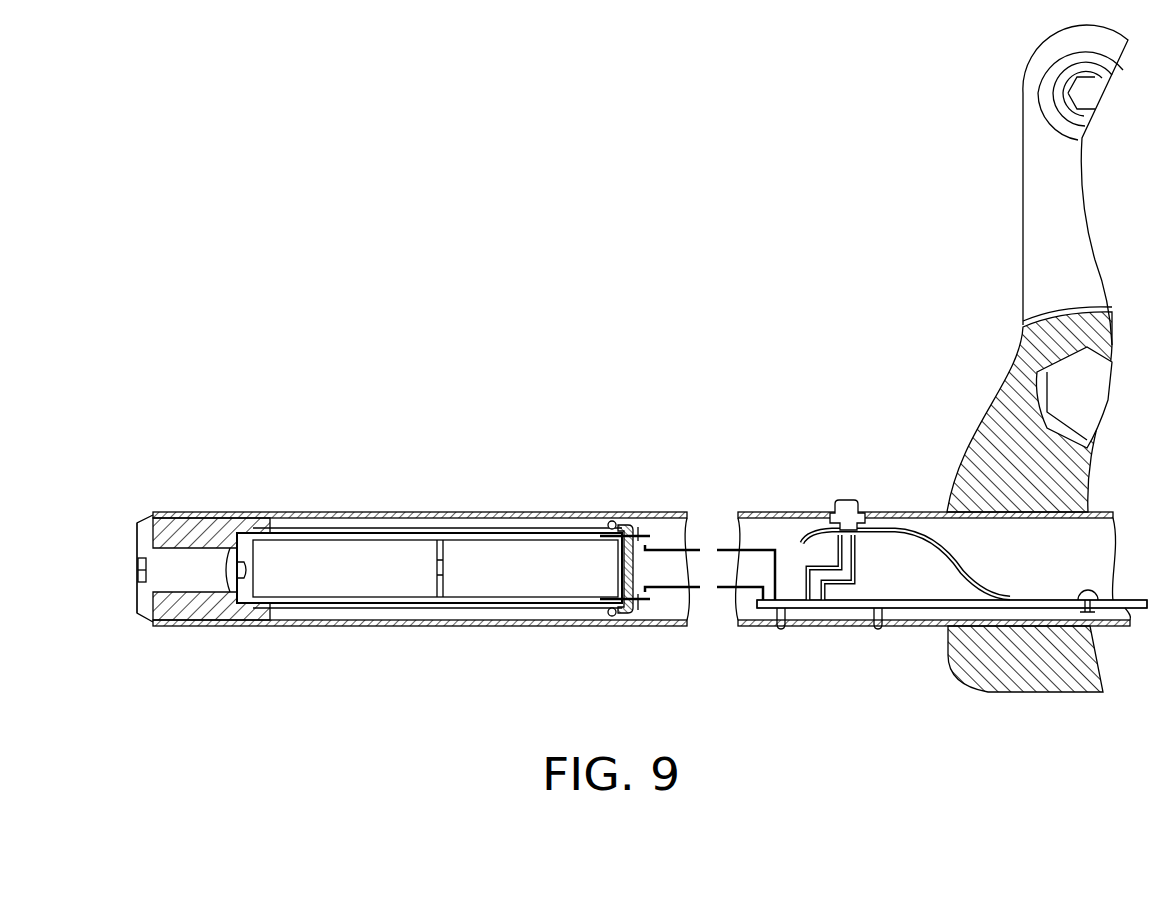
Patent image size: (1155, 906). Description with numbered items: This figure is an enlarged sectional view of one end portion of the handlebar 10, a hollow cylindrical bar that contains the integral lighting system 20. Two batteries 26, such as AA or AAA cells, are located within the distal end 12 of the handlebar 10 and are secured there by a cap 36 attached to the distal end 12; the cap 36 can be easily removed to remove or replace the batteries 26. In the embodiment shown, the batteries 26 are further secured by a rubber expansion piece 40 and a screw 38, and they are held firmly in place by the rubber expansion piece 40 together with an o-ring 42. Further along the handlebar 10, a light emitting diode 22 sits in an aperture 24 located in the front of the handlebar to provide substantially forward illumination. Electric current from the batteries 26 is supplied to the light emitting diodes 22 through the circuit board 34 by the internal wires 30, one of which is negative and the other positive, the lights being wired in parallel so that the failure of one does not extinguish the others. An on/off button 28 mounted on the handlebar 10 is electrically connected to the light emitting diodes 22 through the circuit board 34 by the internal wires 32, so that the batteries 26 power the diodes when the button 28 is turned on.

The handlebar 10 is at (610, 413).
The distal end 12 is at (313, 626).
The integral lighting system 20 is at (601, 651).
The light emitting diode 22 is at (779, 615).
The aperture 24 is at (878, 624).
The battery 26 is at (290, 543).
The on/off button 28 is at (848, 497).
The internal wire 30 is at (694, 592).
The internal wire 32 is at (843, 561).
The circuit board 34 is at (768, 610).
The cap 36 is at (132, 604).
The screw 38 is at (137, 540).
The rubber expansion piece 40 is at (208, 523).
The o-ring 42 is at (613, 519).